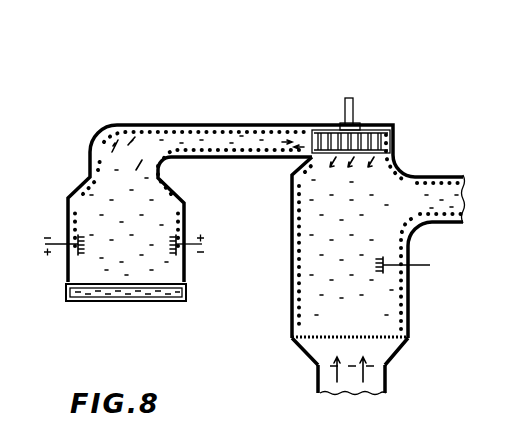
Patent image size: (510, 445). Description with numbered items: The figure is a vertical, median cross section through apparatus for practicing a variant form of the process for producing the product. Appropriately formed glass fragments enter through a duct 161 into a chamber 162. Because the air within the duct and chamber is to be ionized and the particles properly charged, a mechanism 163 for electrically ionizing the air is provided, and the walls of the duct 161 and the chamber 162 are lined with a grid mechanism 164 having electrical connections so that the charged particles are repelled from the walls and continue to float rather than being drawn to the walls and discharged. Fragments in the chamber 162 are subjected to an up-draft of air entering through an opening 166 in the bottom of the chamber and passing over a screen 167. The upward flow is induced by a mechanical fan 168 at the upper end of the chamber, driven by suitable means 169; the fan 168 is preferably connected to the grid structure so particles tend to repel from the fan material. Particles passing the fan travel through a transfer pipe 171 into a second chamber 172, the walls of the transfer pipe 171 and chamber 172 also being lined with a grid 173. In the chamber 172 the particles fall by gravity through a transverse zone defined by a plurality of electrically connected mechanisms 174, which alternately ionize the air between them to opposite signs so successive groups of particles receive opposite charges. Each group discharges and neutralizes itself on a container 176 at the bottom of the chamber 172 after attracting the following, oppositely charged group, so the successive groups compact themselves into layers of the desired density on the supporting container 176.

The duct 161 is at (448, 175).
The chamber 162 is at (360, 323).
The mechanism for electrically ionizing the air 163 is at (390, 267).
The grid mechanism 164 is at (405, 313).
The opening 166 is at (375, 388).
The screen 167 is at (323, 333).
The mechanical fan 168 is at (378, 145).
The driving means 169 is at (355, 112).
The transfer pipe 171 is at (272, 110).
The chamber 172 is at (167, 220).
The grid 173 is at (203, 148).
The mechanisms 174 is at (62, 247).
The container 176 is at (173, 302).